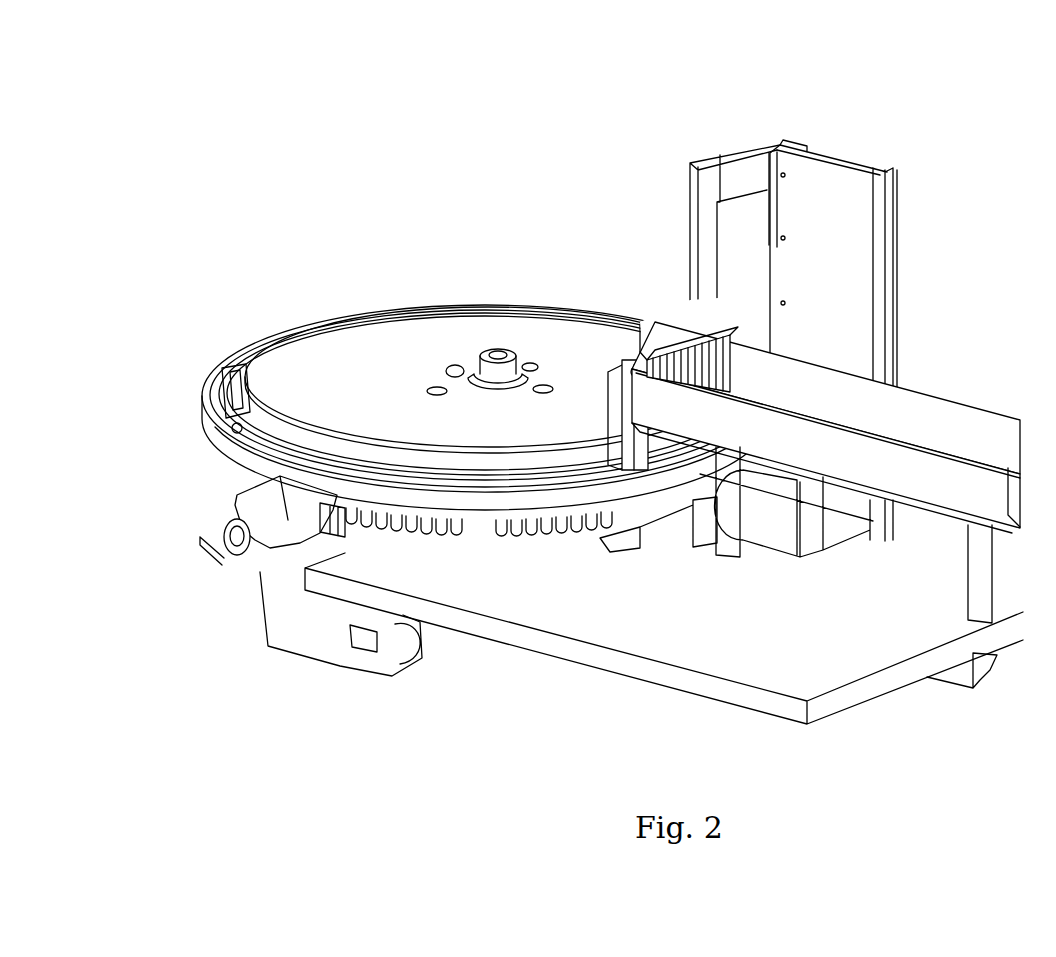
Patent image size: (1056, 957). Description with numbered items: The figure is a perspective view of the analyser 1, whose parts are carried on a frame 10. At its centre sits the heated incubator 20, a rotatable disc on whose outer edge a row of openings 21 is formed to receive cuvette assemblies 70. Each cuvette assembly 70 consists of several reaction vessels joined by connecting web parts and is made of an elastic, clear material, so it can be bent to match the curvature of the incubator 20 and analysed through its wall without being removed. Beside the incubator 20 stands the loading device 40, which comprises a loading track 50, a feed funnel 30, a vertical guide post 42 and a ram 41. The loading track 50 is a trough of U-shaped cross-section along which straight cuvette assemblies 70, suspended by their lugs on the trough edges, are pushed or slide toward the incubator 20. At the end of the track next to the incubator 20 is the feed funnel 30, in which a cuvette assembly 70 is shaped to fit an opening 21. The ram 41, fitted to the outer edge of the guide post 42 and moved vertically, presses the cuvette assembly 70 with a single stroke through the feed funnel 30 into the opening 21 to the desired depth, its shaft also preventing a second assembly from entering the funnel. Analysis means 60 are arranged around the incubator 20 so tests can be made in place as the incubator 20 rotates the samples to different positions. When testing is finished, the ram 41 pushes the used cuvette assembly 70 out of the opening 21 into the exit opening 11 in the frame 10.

The analyser 1 is at (444, 150).
The frame 10 is at (772, 637).
The exit opening 11 is at (641, 531).
The heated incubator 20 is at (400, 332).
The openings 21 is at (222, 388).
The feed funnel 30 is at (616, 388).
The loading device 40 is at (935, 128).
The ram 41 is at (700, 182).
The vertical guide post 42 is at (847, 278).
The loading track 50 is at (935, 412).
The analysis means 60 is at (262, 568).
The cuvette assembly 70 is at (506, 534).